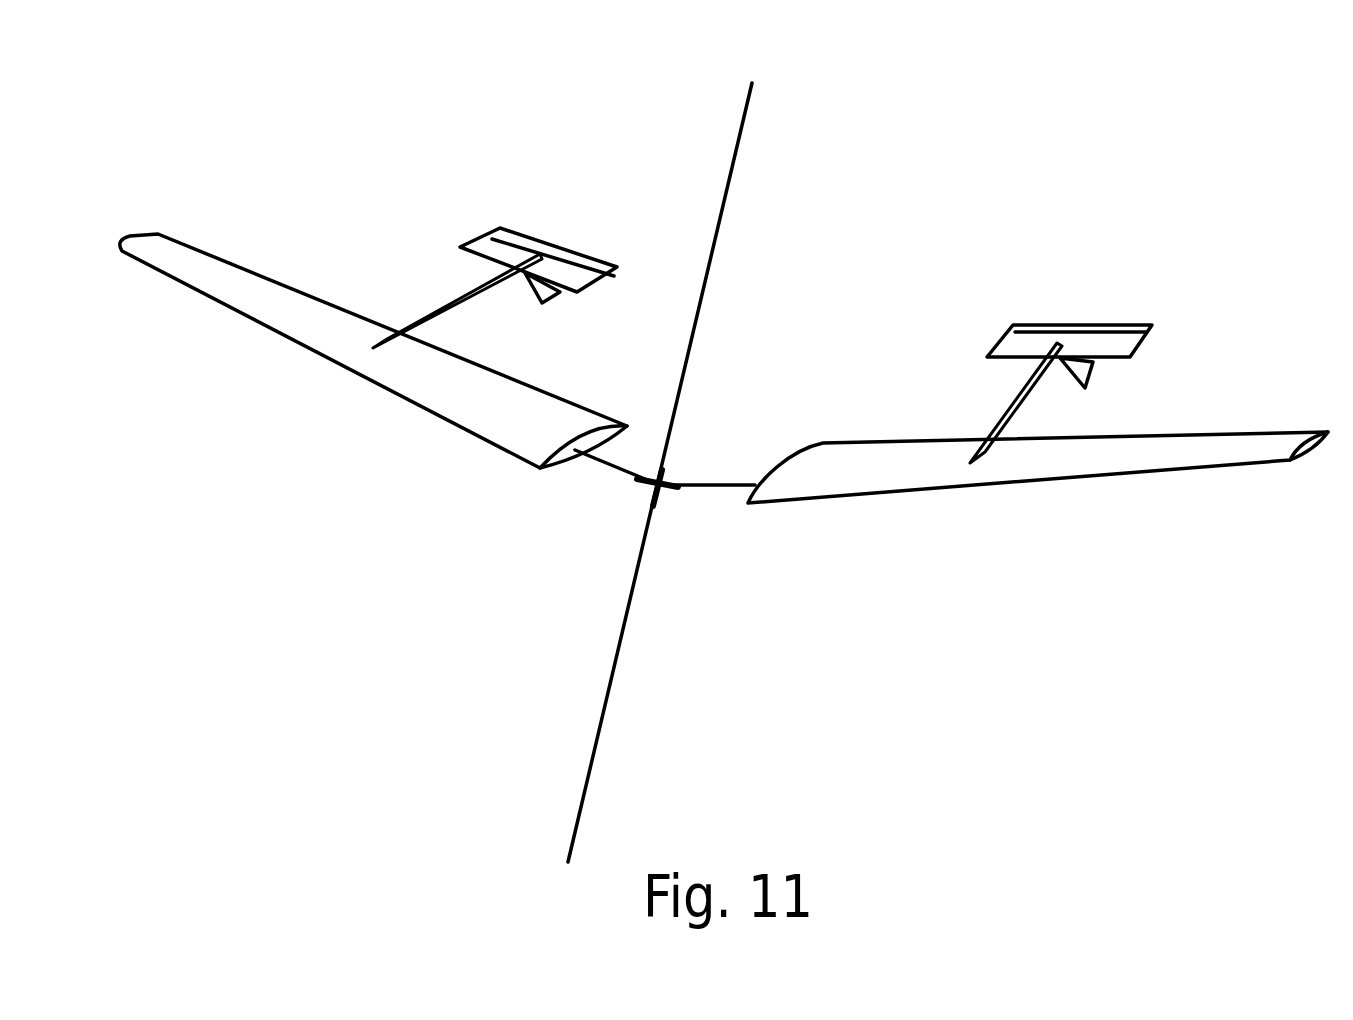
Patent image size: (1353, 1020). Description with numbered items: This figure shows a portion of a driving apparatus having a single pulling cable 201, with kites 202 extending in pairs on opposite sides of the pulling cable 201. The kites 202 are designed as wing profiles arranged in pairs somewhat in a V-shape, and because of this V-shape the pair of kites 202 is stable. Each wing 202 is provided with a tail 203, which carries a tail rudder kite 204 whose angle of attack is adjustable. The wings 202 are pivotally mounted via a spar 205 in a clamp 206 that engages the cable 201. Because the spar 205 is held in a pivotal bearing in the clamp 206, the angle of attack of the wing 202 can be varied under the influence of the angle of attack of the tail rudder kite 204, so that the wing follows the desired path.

The pulling cable 201 is at (705, 295).
The kite 202 is at (305, 318).
The tail 203 is at (724, 330).
The tail rudder kite 204 is at (587, 262).
The spar 205 is at (597, 463).
The clamp 206 is at (657, 497).